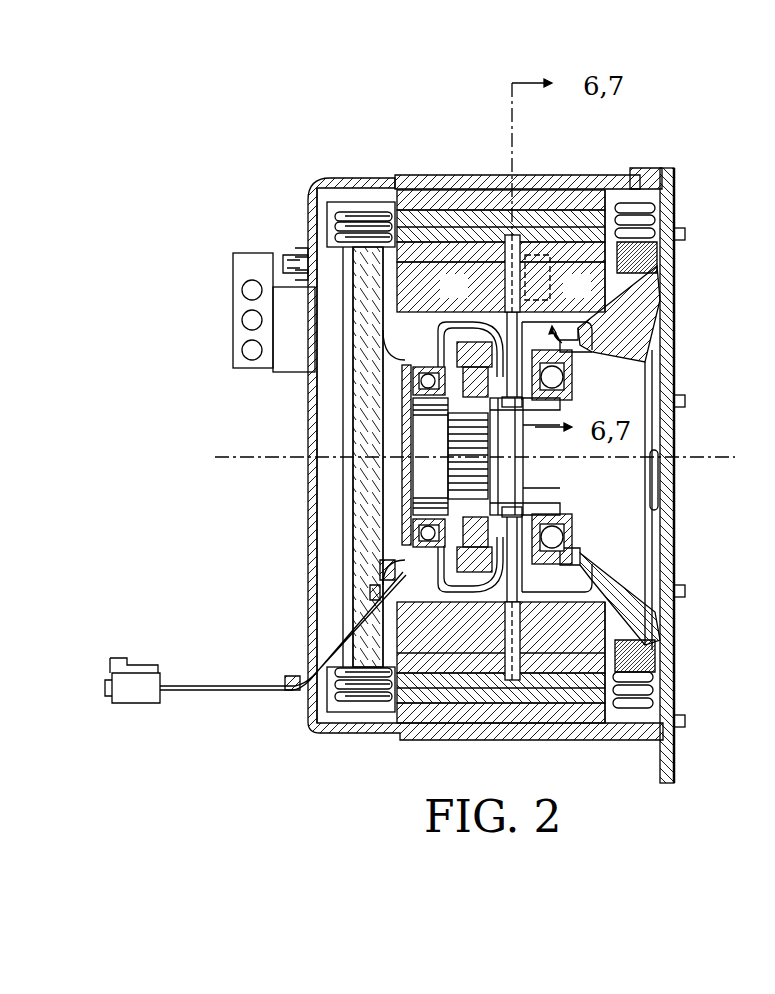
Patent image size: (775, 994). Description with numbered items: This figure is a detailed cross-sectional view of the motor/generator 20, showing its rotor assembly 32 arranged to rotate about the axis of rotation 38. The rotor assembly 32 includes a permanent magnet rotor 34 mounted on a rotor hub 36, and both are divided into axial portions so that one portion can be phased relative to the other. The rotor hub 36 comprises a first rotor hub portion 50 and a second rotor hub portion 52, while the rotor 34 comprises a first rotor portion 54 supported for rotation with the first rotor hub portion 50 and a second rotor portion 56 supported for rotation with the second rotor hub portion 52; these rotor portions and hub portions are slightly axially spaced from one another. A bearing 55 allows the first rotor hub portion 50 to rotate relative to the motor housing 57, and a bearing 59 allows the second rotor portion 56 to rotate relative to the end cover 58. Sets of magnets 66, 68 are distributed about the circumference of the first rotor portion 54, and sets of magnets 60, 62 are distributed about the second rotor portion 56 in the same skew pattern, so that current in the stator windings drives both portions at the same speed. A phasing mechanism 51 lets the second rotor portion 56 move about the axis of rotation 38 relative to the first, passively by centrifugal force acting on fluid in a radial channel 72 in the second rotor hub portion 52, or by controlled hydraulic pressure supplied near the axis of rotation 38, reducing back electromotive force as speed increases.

The motor/generator 20 is at (285, 128).
The motor housing 57 is at (306, 217).
The rotor 34 is at (390, 233).
The set of magnets 66 is at (410, 268).
The set of magnets 68 is at (483, 257).
The first rotor portion 54 is at (454, 286).
The second rotor portion 56 is at (577, 286).
The set of magnets 60 is at (558, 257).
The phasing mechanism 51 is at (562, 257).
The set of magnets 62 is at (598, 273).
The end cover 58 is at (668, 272).
The rotor assembly 32 is at (582, 338).
The second rotor hub portion 52 is at (613, 400).
The bearing 59 is at (570, 527).
The rotor hub 36 is at (548, 395).
The first rotor hub portion 50 is at (480, 390).
The radial channel 72 is at (513, 520).
The bearing 55 is at (410, 378).
The axis of rotation 38 is at (225, 455).